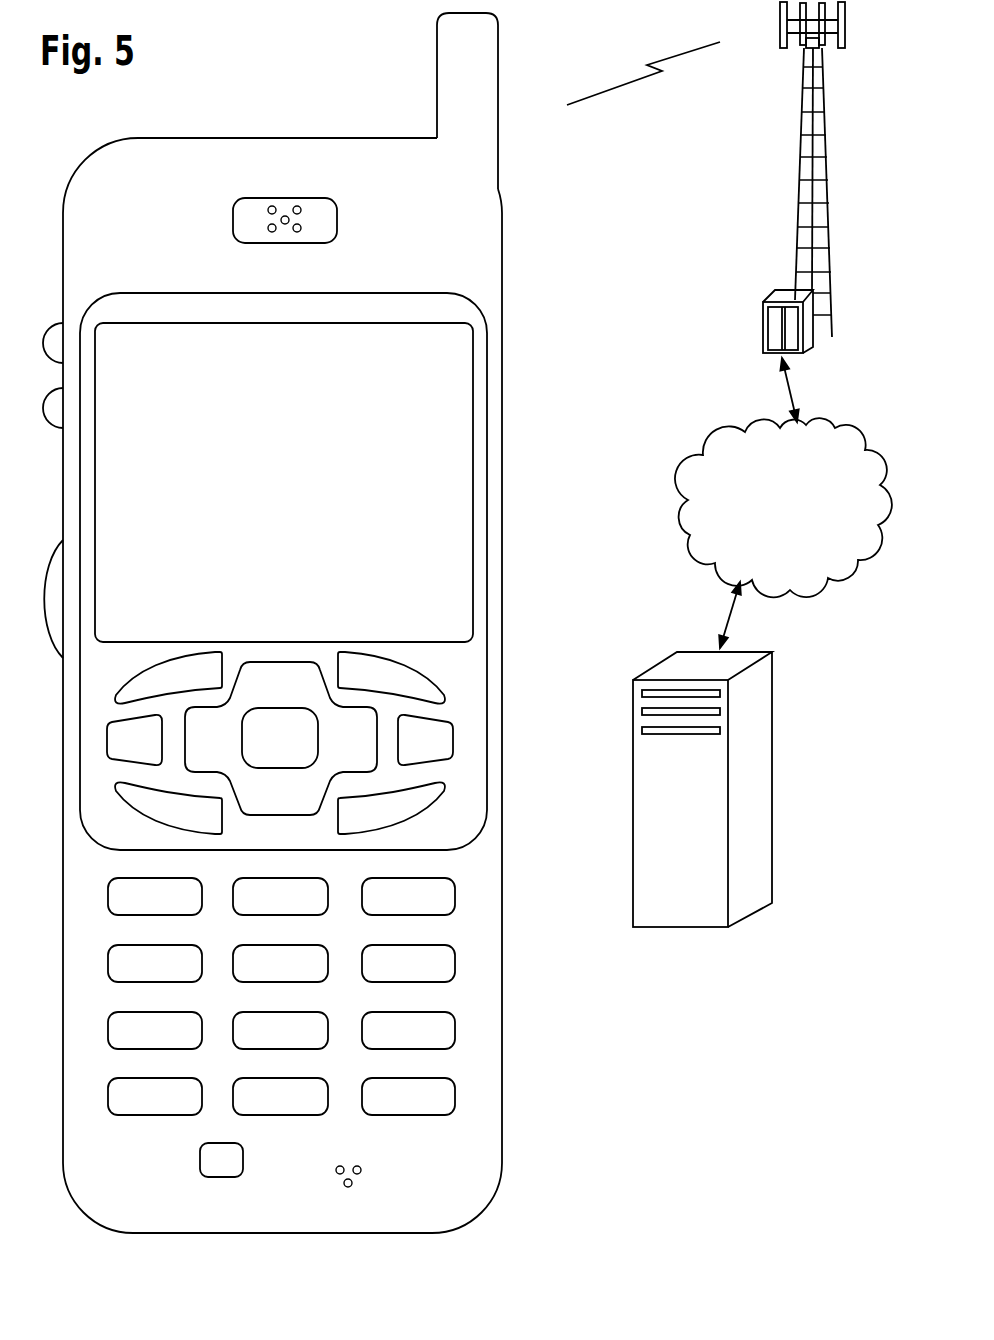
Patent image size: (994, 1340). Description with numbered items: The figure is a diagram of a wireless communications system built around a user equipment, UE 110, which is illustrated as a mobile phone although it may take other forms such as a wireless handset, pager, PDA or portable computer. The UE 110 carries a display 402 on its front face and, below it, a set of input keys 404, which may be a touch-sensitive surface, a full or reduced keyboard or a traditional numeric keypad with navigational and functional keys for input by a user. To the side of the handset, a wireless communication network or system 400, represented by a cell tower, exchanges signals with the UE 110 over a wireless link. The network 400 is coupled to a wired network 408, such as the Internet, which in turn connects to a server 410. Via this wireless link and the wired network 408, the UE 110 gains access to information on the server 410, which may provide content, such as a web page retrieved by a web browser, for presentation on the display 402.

The UE 110 is at (106, 1232).
The wireless communication network or system 400 is at (795, 193).
The display 402 is at (487, 338).
The input keys 404 is at (513, 653).
The wired network 408 is at (700, 559).
The server 410 is at (677, 927).